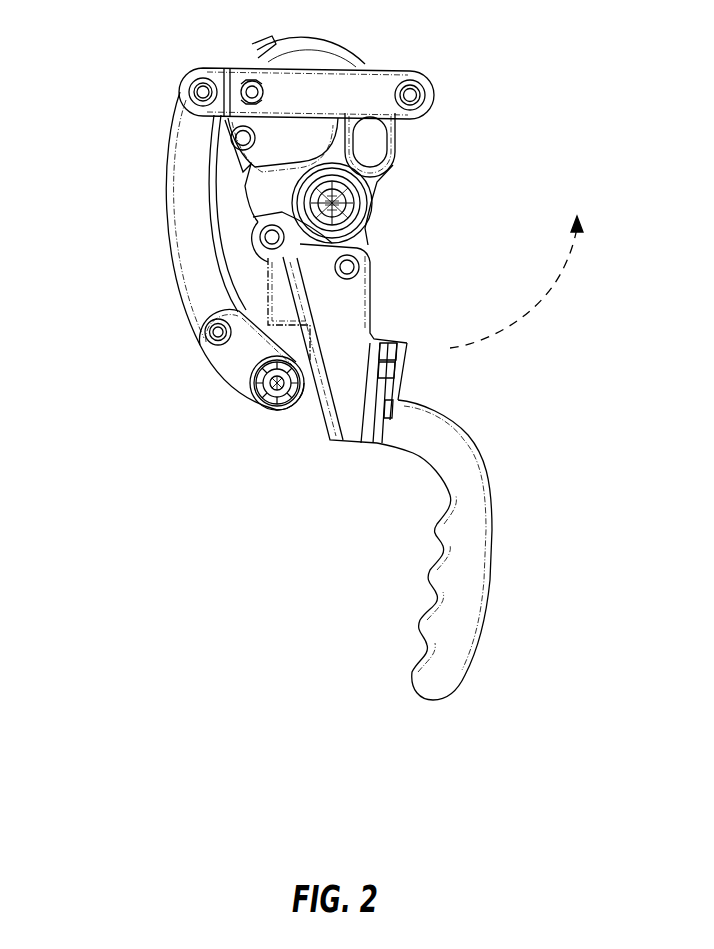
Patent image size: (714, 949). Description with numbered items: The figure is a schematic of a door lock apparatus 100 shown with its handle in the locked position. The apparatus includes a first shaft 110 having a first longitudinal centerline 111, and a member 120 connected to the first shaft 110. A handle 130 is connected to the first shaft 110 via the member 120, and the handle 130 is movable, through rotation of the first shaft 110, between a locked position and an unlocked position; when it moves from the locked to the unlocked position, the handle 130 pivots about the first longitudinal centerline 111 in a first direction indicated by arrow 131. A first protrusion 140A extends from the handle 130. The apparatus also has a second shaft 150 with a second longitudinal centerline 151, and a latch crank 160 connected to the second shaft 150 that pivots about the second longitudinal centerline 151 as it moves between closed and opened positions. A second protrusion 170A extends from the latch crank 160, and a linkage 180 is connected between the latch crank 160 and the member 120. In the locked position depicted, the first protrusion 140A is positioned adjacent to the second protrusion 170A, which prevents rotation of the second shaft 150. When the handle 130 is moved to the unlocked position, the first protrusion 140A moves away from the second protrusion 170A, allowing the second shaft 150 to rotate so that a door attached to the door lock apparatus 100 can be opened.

The door lock apparatus 100 is at (124, 50).
The first shaft 110 is at (372, 228).
The first longitudinal centerline 111 is at (392, 170).
The member 120 is at (393, 140).
The handle 130 is at (475, 522).
The arrow 131 is at (548, 300).
The first protrusion 140A is at (280, 308).
The second shaft 150 is at (258, 384).
The second longitudinal centerline 151 is at (266, 396).
The latch crank 160 is at (232, 357).
The second protrusion 170A is at (300, 350).
The linkage 180 is at (368, 67).